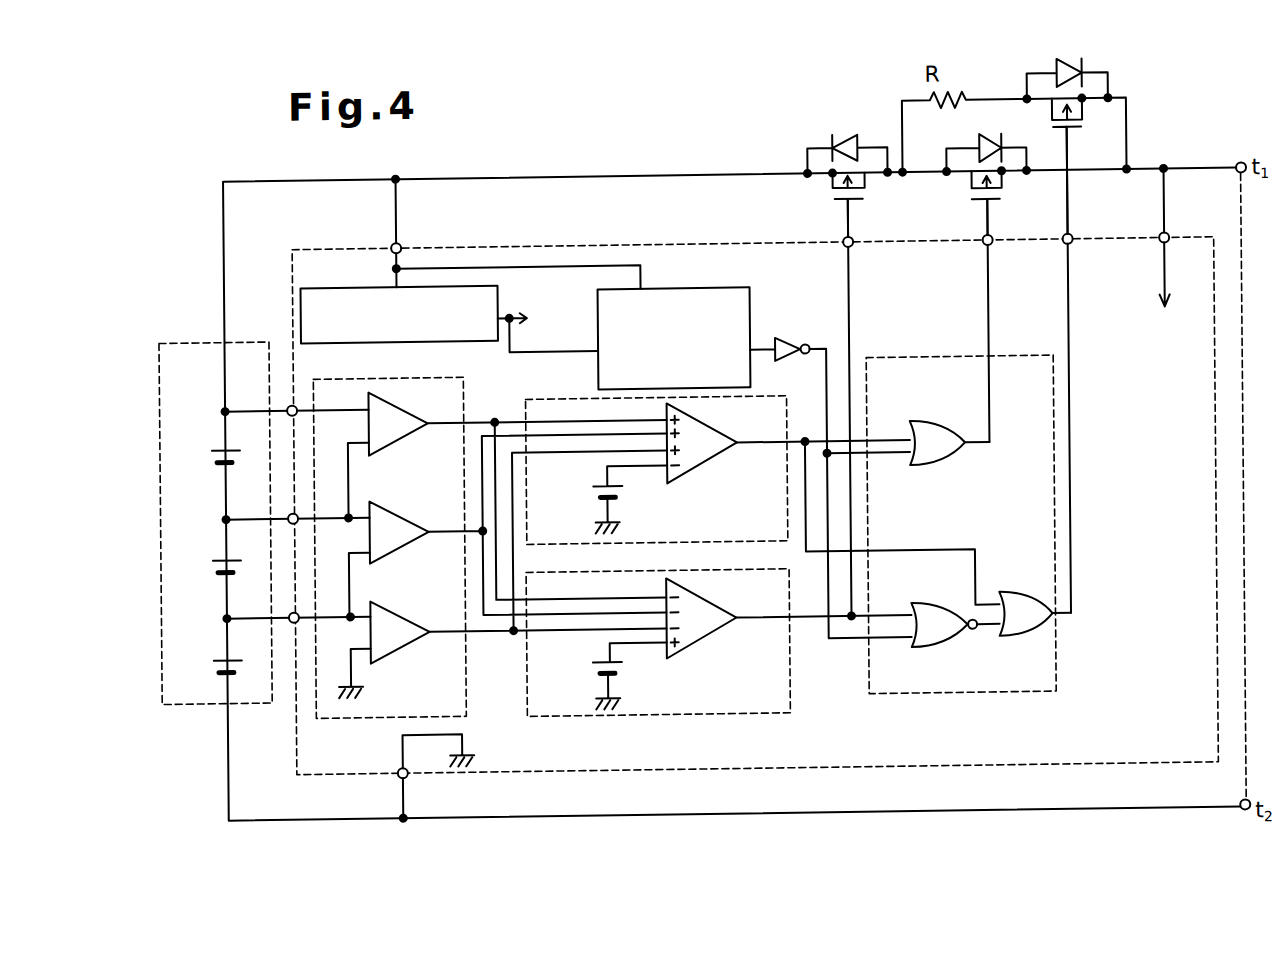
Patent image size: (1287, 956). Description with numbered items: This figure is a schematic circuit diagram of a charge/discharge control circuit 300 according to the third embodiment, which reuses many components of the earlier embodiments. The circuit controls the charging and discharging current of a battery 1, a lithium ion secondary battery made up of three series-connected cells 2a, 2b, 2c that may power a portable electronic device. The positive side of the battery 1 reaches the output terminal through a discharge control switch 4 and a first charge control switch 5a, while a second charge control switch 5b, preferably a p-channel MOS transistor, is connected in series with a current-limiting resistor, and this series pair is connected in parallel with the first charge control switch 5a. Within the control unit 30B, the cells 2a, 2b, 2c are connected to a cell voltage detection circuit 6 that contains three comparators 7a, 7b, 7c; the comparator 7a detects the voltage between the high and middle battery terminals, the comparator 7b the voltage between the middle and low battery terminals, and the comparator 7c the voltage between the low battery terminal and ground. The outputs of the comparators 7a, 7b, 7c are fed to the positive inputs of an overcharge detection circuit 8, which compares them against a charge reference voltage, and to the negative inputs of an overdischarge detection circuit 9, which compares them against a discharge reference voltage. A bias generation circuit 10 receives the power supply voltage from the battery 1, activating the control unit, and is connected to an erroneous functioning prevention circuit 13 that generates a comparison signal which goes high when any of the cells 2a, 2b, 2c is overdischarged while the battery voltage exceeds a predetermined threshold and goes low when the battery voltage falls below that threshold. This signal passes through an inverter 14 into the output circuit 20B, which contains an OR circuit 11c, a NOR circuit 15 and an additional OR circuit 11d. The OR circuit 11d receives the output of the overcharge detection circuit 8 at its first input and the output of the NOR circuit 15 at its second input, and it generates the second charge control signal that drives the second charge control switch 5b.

The battery 1 is at (205, 332).
The cell 2a is at (215, 439).
The cell 2b is at (216, 547).
The cell 2c is at (217, 649).
The discharge control switch 4 is at (837, 194).
The first charge control switch 5a is at (974, 193).
The second charge control switch 5b is at (1088, 123).
The cell voltage detection circuit 6 is at (467, 386).
The comparator 7a is at (396, 438).
The comparator 7b is at (396, 544).
The comparator 7c is at (396, 641).
The overcharge detection circuit 8 is at (587, 395).
The overdischarge detection circuit 9 is at (554, 716).
The bias generation circuit 10 is at (365, 338).
The OR circuit 11c is at (926, 423).
The OR circuit 11d is at (1024, 597).
The erroneous functioning prevention circuit 13 is at (751, 376).
The inverter 14 is at (788, 339).
The NOR circuit 15 is at (931, 606).
The output circuit 20B is at (931, 359).
The protection control circuit 30B is at (617, 242).
The charge/discharge control circuit 300 is at (1056, 828).